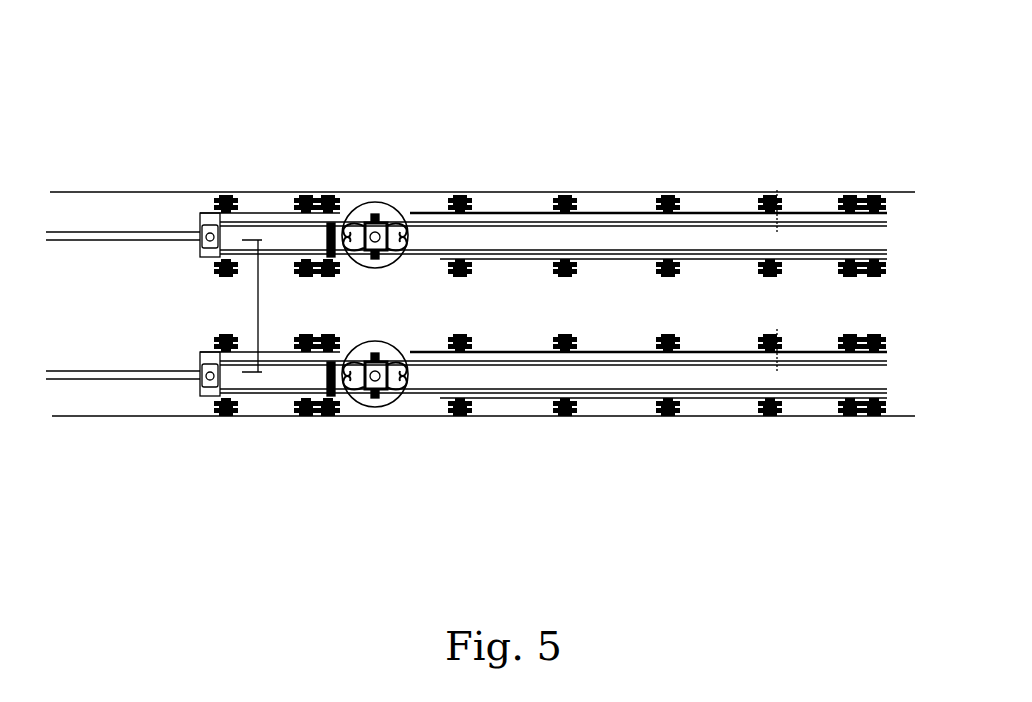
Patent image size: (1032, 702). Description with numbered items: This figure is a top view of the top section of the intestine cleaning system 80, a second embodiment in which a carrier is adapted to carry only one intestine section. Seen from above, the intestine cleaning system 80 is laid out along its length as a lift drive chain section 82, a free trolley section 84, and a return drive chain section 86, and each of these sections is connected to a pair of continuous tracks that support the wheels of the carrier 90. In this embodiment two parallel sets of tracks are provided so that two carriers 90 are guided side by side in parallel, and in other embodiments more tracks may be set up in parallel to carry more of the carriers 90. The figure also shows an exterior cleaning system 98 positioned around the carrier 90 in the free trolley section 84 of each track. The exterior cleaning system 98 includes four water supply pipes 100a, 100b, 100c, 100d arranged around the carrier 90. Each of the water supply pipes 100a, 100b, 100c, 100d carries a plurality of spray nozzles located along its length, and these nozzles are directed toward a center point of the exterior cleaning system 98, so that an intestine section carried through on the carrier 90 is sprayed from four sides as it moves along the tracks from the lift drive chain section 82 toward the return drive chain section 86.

The intestine cleaning system 80 is at (569, 37).
The lift drive chain section 82 is at (198, 178).
The free trolley section 84 is at (342, 178).
The return drive chain section 86 is at (462, 178).
The carrier 90 is at (396, 348).
The exterior cleaning system 98 is at (375, 407).
The water supply pipe 100a is at (352, 390).
The water supply pipe 100b is at (348, 358).
The water supply pipe 100c is at (393, 358).
The water supply pipe 100d is at (398, 393).